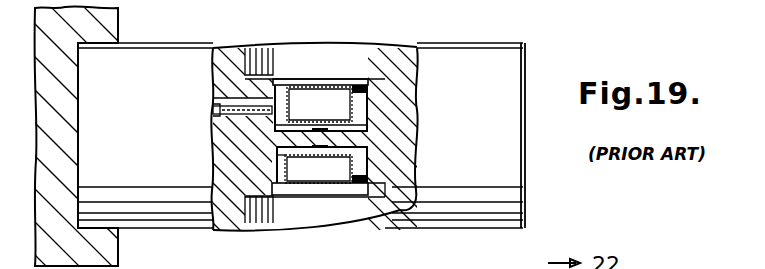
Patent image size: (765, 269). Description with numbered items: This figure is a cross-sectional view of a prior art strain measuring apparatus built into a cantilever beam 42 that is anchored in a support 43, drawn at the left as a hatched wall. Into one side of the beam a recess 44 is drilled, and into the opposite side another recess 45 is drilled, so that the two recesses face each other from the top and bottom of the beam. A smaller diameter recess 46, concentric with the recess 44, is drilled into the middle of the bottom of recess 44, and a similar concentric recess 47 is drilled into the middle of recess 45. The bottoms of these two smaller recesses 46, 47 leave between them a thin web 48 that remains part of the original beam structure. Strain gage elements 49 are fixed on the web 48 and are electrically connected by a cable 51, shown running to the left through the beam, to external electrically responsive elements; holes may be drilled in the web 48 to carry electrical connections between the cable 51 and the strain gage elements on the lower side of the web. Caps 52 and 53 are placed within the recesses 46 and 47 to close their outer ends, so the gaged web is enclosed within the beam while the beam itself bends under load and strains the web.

The cantilever beam 42 is at (488, 50).
The support 43 is at (117, 33).
The recess 44 is at (389, 46).
The recess 45 is at (397, 195).
The smaller diameter recess 46 is at (358, 100).
The concentric recess 47 is at (349, 160).
The web 48 is at (314, 130).
The strain gage elements 49 is at (275, 152).
The cable 51 is at (224, 100).
The cap 52 is at (324, 126).
The cap 53 is at (313, 160).